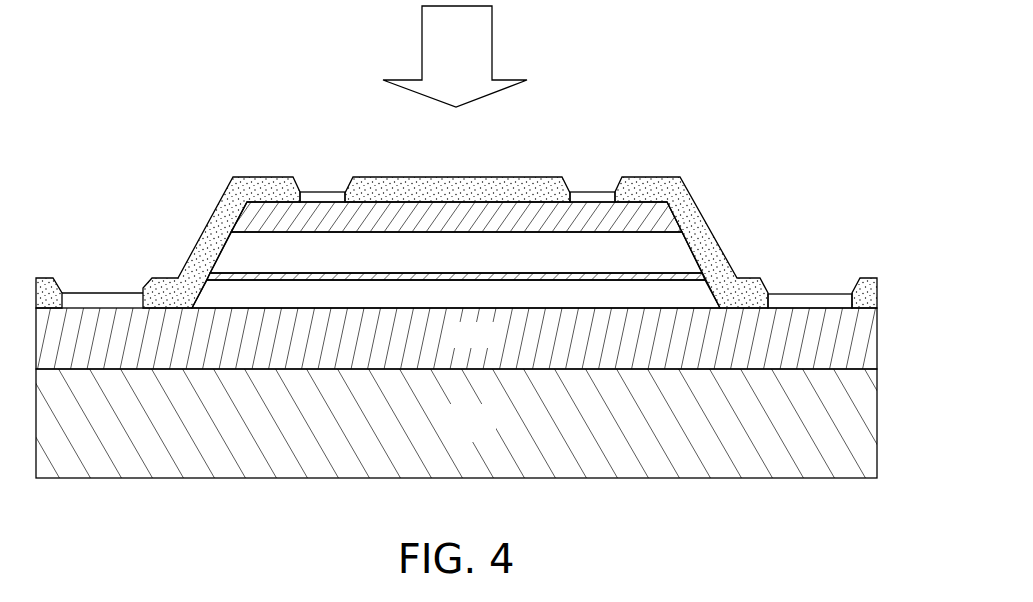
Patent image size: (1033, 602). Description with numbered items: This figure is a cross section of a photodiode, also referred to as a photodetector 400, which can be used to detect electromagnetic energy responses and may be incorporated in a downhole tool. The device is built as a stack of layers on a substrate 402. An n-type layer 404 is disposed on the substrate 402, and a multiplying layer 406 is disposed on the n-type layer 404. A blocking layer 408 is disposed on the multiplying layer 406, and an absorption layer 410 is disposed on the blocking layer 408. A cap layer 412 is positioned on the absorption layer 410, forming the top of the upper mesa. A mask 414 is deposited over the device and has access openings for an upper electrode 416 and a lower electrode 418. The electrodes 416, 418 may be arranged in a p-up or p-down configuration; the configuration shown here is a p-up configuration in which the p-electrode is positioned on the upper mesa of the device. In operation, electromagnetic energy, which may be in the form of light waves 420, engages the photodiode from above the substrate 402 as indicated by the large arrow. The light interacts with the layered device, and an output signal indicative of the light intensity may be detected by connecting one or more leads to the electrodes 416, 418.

The photodetector 400 is at (456, 264).
The substrate 402 is at (448, 436).
The n-type layer 404 is at (448, 345).
The multiplying layer 406 is at (227, 294).
The blocking layer 408 is at (662, 273).
The absorption layer 410 is at (250, 255).
The cap layer 412 is at (655, 217).
The mask 414 is at (250, 177).
The upper electrode 416 is at (322, 191).
The lower electrode 418 is at (823, 293).
The light waves 420 is at (433, 60).